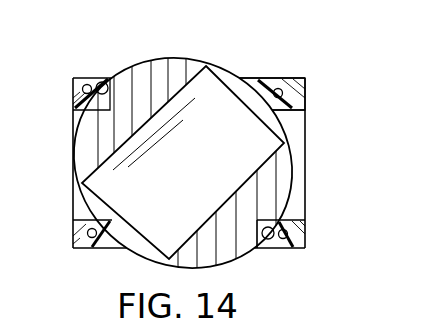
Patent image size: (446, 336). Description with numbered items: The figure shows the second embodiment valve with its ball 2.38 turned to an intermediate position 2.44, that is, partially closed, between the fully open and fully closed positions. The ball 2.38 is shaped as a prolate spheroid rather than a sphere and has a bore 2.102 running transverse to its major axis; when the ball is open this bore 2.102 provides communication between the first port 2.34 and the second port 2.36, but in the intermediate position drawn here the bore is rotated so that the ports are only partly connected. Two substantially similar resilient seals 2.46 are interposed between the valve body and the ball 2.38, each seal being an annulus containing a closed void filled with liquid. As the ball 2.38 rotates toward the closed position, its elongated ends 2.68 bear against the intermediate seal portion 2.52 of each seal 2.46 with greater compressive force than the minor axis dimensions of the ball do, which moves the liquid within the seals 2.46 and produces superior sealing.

The intermediate position 2.44 is at (313, 103).
The second port 2.36 is at (58, 196).
The first port 2.34 is at (312, 162).
The ball 2.38 is at (175, 70).
The bore 2.102 is at (254, 141).
The intermediate seal portion 2.52 is at (109, 76).
The elongated ends 2.68 is at (108, 76).
The seal 2.46 is at (273, 84).